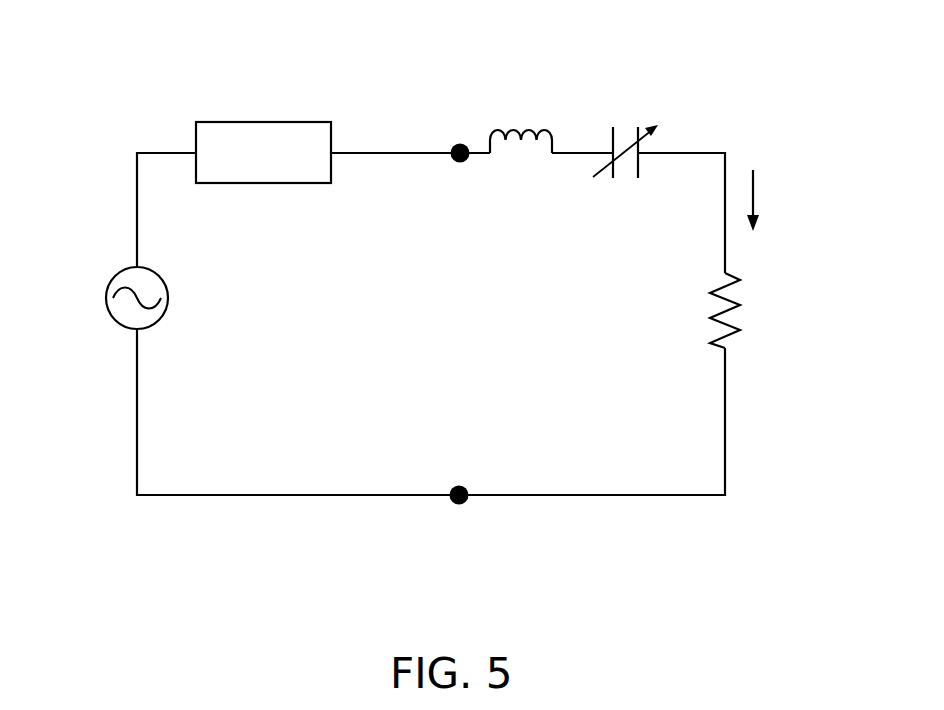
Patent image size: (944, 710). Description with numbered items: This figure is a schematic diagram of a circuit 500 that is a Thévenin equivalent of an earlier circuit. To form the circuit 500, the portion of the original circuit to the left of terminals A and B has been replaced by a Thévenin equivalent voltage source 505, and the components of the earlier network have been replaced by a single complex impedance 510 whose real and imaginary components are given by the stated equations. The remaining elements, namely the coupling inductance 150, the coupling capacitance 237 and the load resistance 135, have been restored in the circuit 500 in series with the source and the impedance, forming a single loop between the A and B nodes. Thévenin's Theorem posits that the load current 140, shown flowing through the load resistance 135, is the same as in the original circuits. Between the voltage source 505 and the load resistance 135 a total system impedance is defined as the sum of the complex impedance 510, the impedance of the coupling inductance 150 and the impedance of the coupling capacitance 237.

The circuit 500 is at (98, 57).
The Thévenin equivalent voltage source VTH 505 is at (107, 262).
The complex impedance ZTH 510 is at (288, 115).
The Lcc 150 is at (490, 120).
The Cc 237 is at (603, 130).
The IL 140 is at (797, 186).
The RL 135 is at (707, 275).